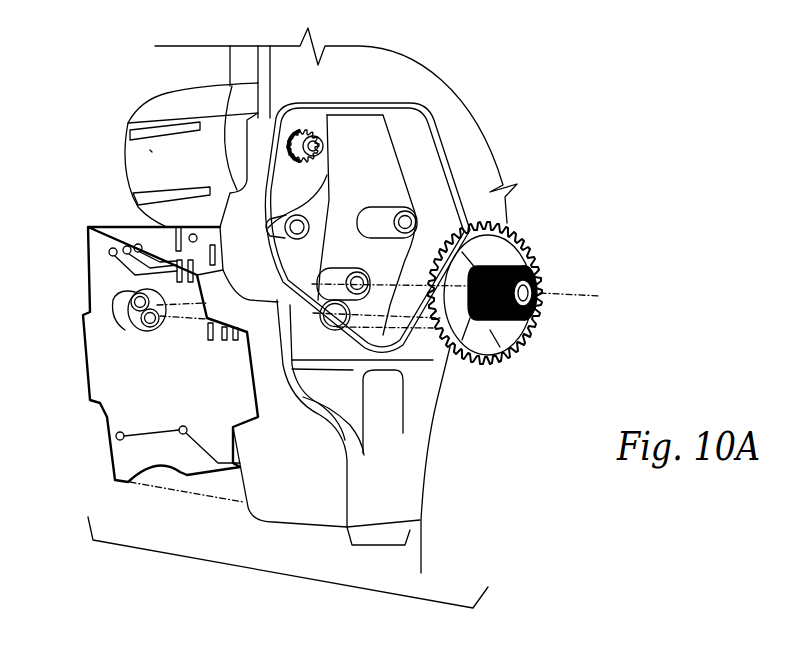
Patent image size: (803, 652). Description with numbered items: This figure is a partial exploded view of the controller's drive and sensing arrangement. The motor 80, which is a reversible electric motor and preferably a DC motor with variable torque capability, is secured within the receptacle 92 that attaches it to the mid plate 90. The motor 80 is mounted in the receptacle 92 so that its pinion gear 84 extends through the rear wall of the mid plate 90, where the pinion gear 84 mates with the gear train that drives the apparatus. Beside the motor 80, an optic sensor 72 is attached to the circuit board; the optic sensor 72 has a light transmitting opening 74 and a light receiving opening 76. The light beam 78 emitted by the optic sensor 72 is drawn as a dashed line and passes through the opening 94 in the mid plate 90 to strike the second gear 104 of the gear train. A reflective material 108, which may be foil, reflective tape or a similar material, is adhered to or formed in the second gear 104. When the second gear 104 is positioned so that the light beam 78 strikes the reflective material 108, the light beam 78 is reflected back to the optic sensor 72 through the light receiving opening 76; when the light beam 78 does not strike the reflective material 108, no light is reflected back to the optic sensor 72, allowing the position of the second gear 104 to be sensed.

The optic sensor 72 is at (125, 315).
The light transmitting opening 74 is at (117, 288).
The light receiving opening 76 is at (150, 327).
The light beam 78 is at (165, 300).
The motor 80 is at (126, 130).
The pinion gear 84 is at (307, 116).
The mid plate 90 is at (357, 497).
The receptacle 92 is at (150, 170).
The opening 94 is at (330, 268).
The second gear 104 is at (533, 255).
The reflective material 108 is at (487, 333).